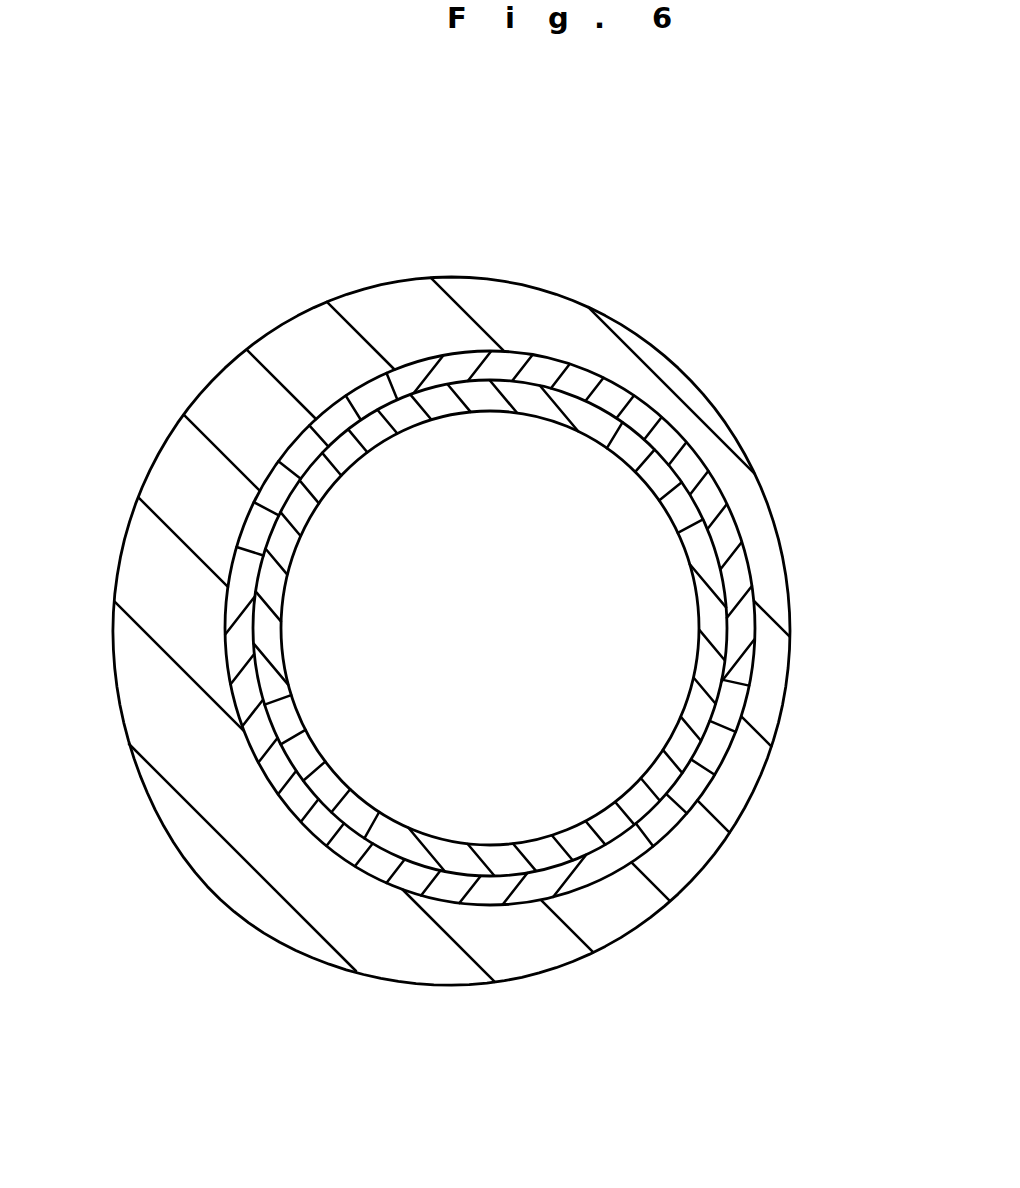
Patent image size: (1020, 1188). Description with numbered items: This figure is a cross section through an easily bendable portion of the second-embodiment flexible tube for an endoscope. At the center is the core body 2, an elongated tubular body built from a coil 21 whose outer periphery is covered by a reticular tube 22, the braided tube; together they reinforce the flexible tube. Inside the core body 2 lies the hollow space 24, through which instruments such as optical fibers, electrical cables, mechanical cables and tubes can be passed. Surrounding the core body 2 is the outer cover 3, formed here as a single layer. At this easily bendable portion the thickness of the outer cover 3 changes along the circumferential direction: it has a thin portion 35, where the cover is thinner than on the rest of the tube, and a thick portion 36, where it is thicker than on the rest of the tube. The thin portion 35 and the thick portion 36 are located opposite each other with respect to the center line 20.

The core body 2 is at (800, 281).
The outer cover 3 is at (110, 533).
The center line 20 is at (452, 630).
The coil 21 is at (627, 443).
The reticular tube 22 is at (713, 498).
The hollow space 24 is at (393, 747).
The thin portion 35 is at (773, 663).
The thick portion 36 is at (187, 643).